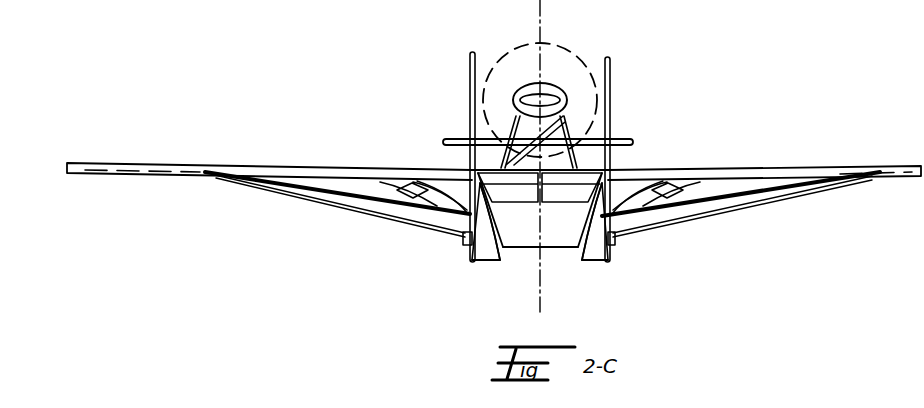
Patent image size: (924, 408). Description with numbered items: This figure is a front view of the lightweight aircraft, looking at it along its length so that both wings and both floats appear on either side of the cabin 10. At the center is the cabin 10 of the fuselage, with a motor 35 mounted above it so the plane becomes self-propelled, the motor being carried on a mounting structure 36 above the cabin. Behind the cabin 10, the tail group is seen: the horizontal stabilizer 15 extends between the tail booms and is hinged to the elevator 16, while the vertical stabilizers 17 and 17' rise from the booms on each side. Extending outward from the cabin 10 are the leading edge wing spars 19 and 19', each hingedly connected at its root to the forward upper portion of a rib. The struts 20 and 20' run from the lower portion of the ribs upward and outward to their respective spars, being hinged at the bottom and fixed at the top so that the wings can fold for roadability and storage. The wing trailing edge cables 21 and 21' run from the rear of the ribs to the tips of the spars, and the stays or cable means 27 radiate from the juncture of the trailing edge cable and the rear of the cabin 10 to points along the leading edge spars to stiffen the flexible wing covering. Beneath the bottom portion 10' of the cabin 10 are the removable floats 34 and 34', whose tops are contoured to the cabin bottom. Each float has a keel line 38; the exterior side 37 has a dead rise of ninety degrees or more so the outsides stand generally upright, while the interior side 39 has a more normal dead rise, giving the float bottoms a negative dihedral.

The cabin 10 is at (572, 194).
The bottom portion of the cabin 10' is at (531, 281).
The horizontal stabilizer 15 is at (470, 157).
The elevator 16 is at (620, 139).
The vertical stabilizer 17 is at (638, 159).
The vertical stabilizer 17' is at (435, 157).
The leading edge wing spar 19 is at (764, 153).
The leading edge wing spar 19' is at (269, 151).
The strut 20 is at (741, 207).
The strut 20' is at (337, 217).
The wing trailing edge cable 21 is at (742, 219).
The wing trailing edge cable 21' is at (340, 221).
The stay or cable means 27 is at (360, 205).
The float 34 is at (640, 254).
The float 34' is at (441, 246).
The motor 35 is at (572, 60).
The engine pylon struts 36 is at (563, 157).
The exterior side of the keel line 37 is at (472, 250).
The keel line 38 is at (471, 262).
The interior side of the keel line 39 is at (490, 262).